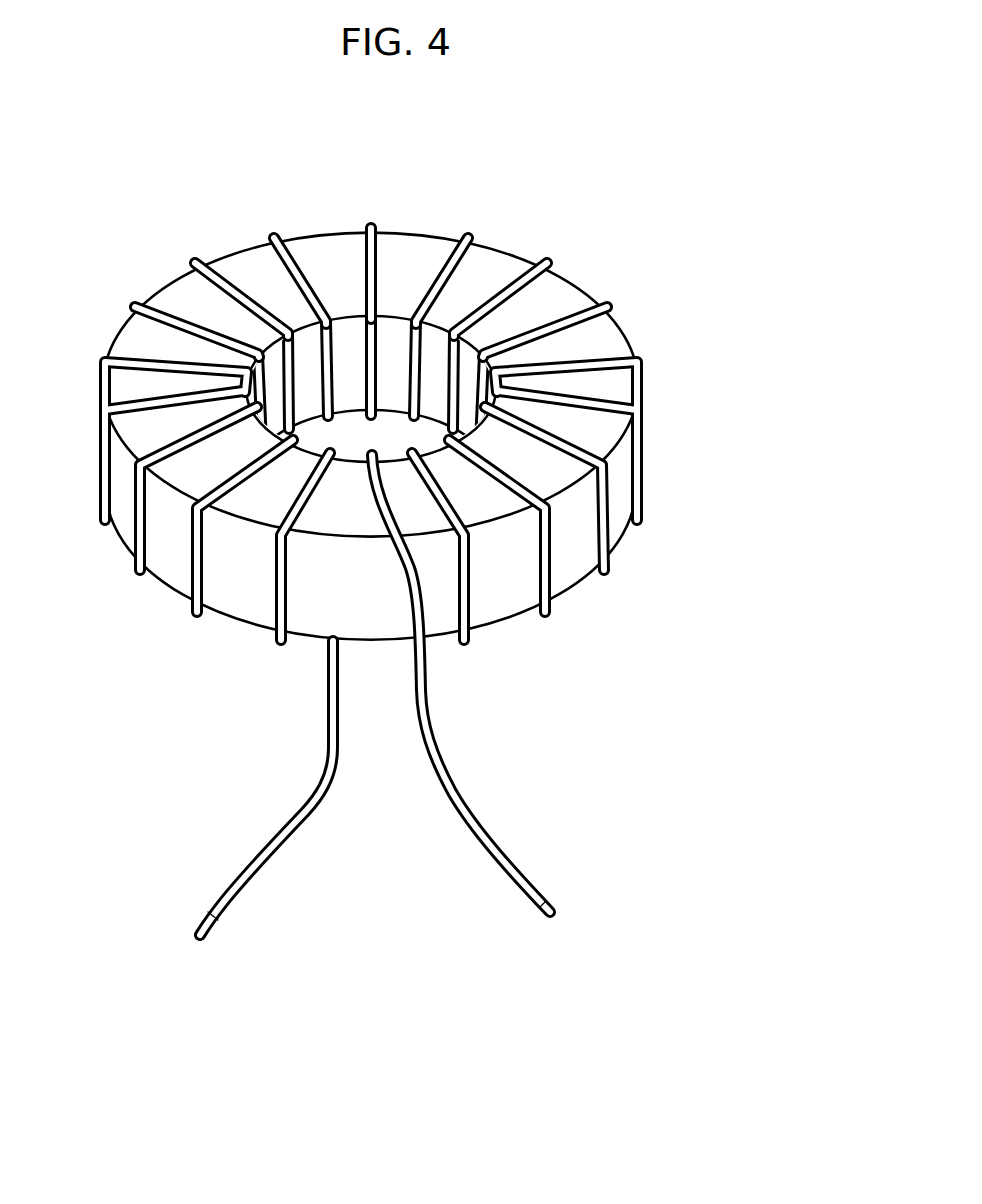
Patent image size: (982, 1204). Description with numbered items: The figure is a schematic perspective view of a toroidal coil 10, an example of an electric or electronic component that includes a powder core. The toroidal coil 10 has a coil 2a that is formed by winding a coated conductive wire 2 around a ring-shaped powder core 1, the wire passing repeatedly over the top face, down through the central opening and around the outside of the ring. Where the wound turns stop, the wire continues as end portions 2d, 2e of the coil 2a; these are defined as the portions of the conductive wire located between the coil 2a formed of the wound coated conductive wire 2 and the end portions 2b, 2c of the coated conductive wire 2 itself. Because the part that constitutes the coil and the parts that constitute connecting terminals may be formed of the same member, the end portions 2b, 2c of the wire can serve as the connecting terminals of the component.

The ring-shaped powder core 1 is at (496, 268).
The toroidal coil 10 is at (439, 564).
The coated conductive wire 2 is at (380, 564).
The coil 2a is at (313, 281).
The end portion of the coated conductive wire 2b is at (212, 931).
The end portion of the coated conductive wire 2c is at (558, 908).
The end portion of the coil 2d is at (327, 681).
The end portion of the coil 2e is at (430, 678).